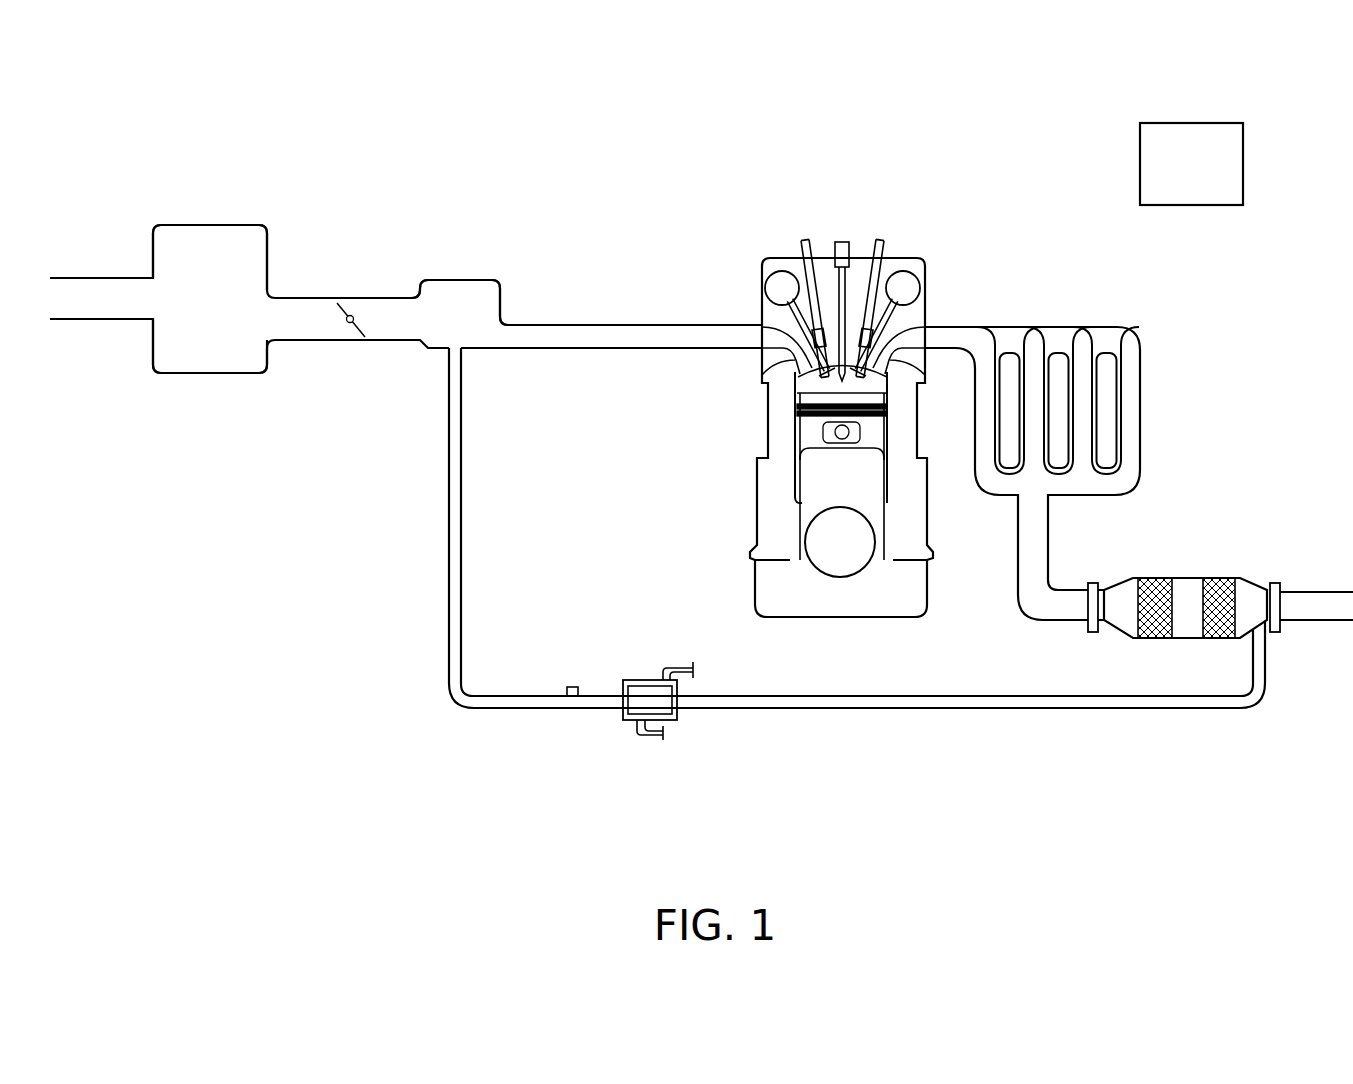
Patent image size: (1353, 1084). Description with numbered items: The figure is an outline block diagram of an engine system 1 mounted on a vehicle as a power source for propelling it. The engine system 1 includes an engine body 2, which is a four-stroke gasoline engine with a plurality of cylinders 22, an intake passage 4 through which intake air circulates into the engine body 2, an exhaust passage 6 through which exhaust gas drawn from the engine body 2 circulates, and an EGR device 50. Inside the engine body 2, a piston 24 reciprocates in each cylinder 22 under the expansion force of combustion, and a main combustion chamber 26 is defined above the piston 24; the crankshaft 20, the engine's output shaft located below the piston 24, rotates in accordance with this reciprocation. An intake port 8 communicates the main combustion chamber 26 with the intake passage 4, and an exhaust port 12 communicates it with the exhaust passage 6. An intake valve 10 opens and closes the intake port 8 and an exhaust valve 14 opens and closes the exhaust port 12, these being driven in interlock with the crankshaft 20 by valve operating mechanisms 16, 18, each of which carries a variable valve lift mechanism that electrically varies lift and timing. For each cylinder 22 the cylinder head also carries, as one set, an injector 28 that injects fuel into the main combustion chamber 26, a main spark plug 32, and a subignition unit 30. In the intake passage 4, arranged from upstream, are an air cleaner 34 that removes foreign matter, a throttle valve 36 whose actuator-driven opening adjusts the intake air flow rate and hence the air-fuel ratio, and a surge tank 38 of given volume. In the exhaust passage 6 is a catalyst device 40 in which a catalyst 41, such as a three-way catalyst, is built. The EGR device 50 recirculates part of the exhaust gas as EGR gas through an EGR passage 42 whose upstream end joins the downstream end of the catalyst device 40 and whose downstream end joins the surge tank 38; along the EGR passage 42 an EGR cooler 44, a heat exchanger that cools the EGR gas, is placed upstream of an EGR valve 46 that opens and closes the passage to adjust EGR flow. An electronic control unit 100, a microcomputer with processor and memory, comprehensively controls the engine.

The engine system 1 is at (536, 166).
The engine body 2 is at (881, 163).
The intake passage 4 is at (622, 327).
The exhaust passage 6 is at (1010, 327).
The intake port 8 is at (770, 337).
The intake valve 10 is at (762, 383).
The exhaust port 12 is at (912, 337).
The exhaust valve 14 is at (927, 385).
The valve operating mechanism 16 is at (775, 265).
The valve operating mechanism 18 is at (910, 265).
The crankshaft 20 is at (803, 528).
The cylinder 22 is at (797, 497).
The piston 24 is at (802, 435).
The main combustion chamber 26 is at (800, 395).
The injector 28 is at (842, 240).
The subignition unit 30 is at (880, 240).
The main spark plug 32 is at (805, 240).
The air cleaner 34 is at (208, 225).
The throttle valve 36 is at (352, 312).
The surge tank 38 is at (458, 280).
The catalyst device 40 is at (1237, 578).
The catalyst 41 is at (1215, 580).
The EGR passage 42 is at (1072, 710).
The EGR cooler 44 is at (672, 720).
The EGR valve 46 is at (573, 702).
The EGR device 50 is at (953, 768).
The electronic control unit 100 is at (1190, 123).